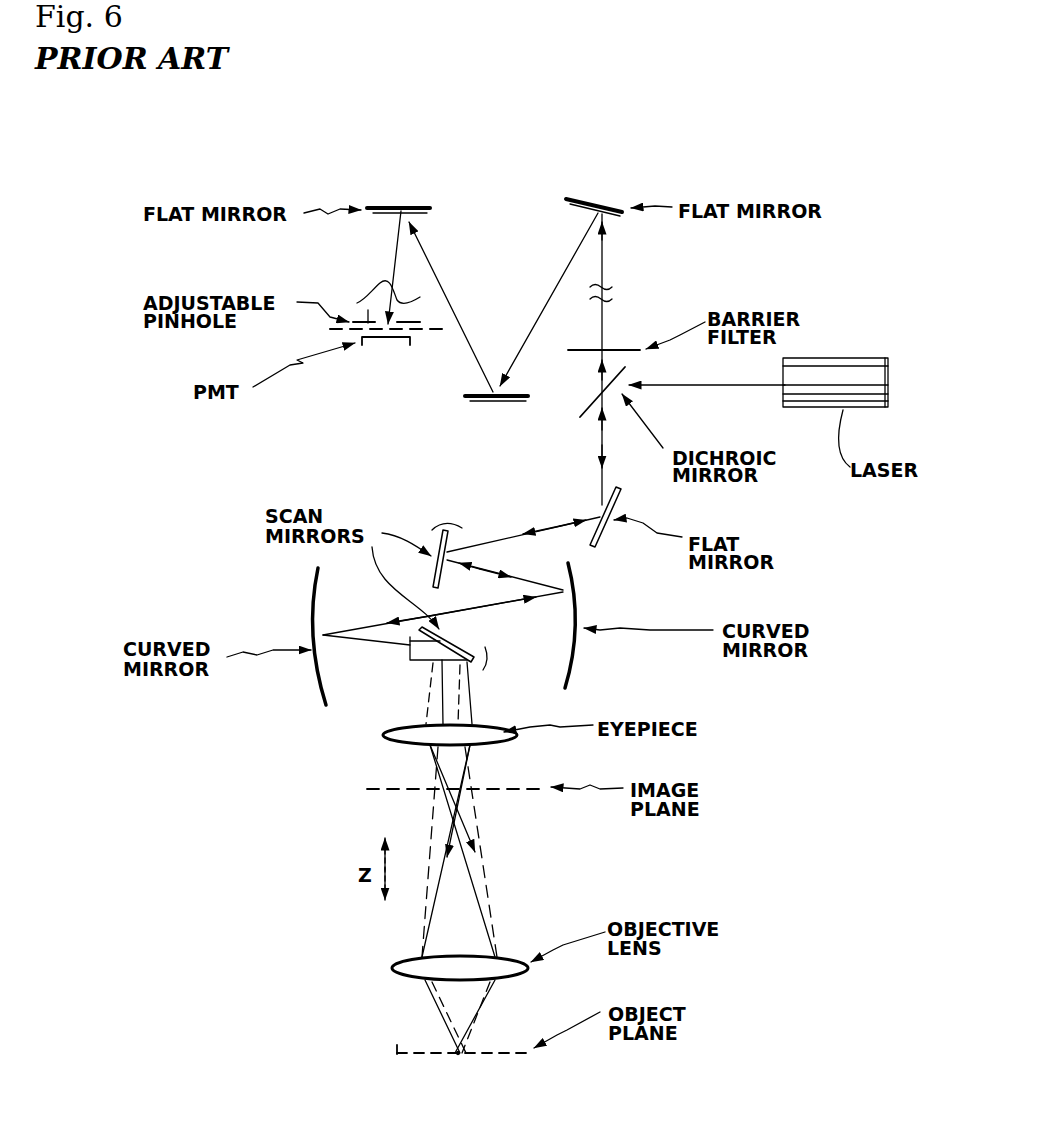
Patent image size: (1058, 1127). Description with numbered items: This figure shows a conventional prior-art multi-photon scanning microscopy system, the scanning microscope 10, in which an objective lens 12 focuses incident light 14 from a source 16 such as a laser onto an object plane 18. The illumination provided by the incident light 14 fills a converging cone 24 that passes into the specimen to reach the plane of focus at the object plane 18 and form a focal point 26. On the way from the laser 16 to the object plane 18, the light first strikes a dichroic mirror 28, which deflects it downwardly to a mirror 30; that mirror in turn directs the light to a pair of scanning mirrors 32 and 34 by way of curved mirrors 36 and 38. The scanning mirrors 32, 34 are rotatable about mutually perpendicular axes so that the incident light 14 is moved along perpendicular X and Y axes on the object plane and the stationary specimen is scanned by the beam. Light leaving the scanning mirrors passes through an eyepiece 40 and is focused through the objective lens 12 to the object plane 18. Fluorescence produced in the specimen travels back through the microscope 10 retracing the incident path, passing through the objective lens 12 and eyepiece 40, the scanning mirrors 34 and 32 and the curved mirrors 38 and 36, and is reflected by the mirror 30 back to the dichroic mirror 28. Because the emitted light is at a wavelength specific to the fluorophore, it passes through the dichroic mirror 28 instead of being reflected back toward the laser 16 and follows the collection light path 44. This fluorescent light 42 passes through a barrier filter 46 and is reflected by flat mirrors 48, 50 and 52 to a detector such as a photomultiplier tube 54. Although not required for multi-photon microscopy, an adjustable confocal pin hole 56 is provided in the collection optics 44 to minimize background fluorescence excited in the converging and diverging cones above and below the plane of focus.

The scanning microscope 10 is at (268, 745).
The objective lens 12 is at (397, 963).
The incident light 14 is at (678, 388).
The source 16 is at (832, 358).
The object plane 18 is at (399, 1052).
The converging cone 24 is at (473, 1003).
The focal point 26 is at (455, 1053).
The dichroic mirror 28 is at (580, 414).
The mirror 30 is at (607, 546).
The scanning mirror 32 is at (447, 548).
The scanning mirror 34 is at (474, 644).
The curved mirror 36 is at (574, 657).
The curved mirror 38 is at (316, 580).
The eyepiece 40 is at (388, 729).
The fluorescent light 42 is at (606, 301).
The light path 44 is at (512, 222).
The barrier filter 46 is at (628, 346).
The flat mirror 48 is at (578, 198).
The flat mirror 50 is at (467, 394).
The flat mirror 52 is at (420, 213).
The photomultiplier tube 54 is at (386, 346).
The adjustable confocal pin hole 56 is at (370, 322).